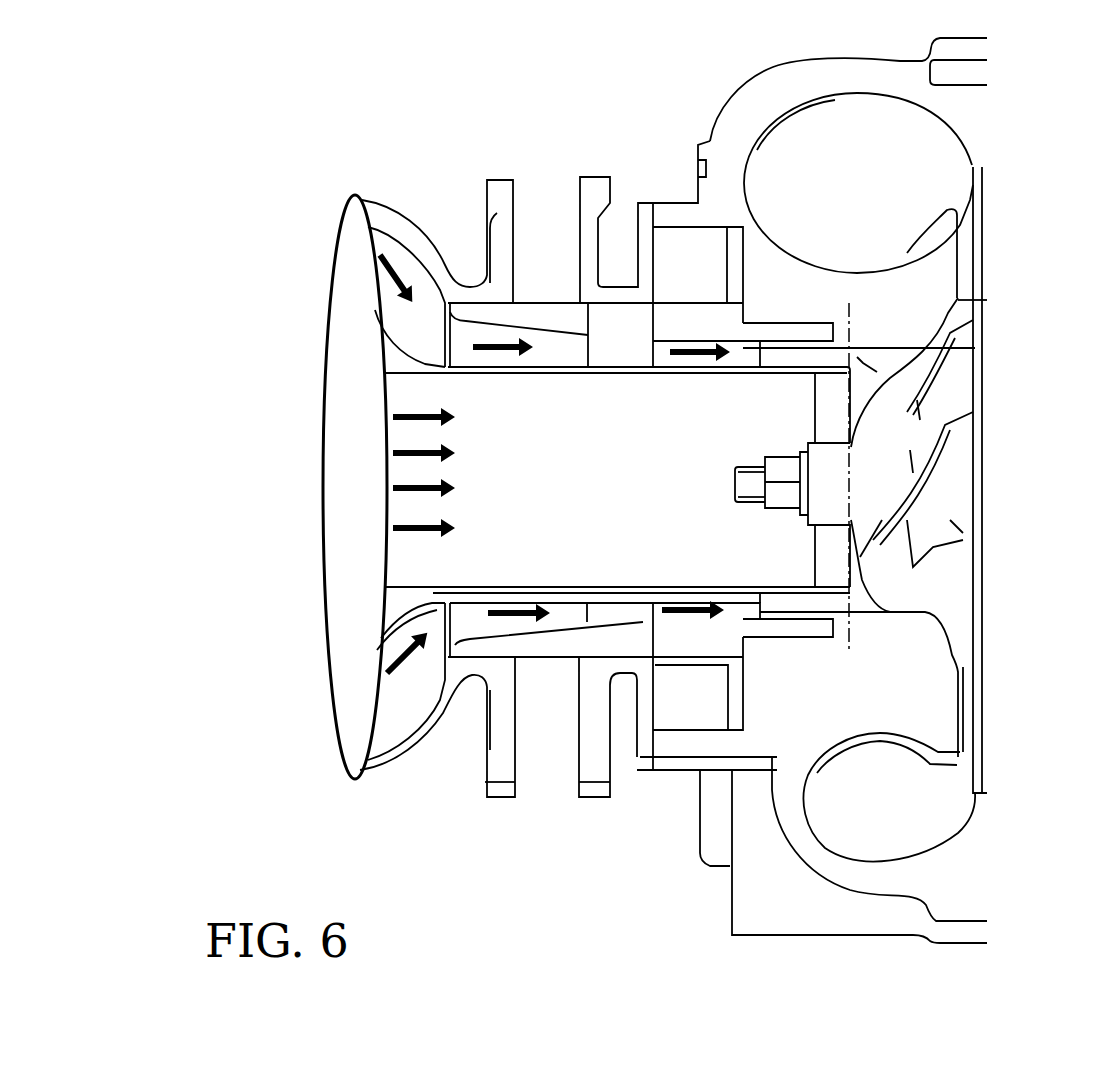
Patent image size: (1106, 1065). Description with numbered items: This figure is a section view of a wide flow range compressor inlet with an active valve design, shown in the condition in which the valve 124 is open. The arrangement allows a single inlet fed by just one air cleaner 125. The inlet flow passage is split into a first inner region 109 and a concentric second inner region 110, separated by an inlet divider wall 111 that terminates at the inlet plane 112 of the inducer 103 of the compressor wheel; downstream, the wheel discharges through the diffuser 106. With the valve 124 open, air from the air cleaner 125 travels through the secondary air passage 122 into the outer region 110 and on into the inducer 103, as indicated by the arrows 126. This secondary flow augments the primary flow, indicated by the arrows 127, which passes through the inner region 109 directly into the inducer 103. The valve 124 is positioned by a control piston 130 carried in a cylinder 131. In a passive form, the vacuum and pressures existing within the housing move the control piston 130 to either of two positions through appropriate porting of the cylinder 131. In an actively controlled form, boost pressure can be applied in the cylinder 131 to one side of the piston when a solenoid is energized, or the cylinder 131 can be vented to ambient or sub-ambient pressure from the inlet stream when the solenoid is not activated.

The inducer 103 is at (856, 597).
The diffuser 106 is at (960, 665).
The first inner region 109 is at (628, 484).
The second inner region 110 is at (788, 360).
The inlet divider wall 111 is at (633, 588).
The inlet plane 112 is at (848, 315).
The secondary air passage 122 is at (580, 357).
The valve 124 is at (537, 312).
The air cleaner 125 is at (340, 517).
The arrows 126 is at (508, 354).
The arrows 127 is at (418, 535).
The control piston 130 is at (734, 260).
The cylinder 131 is at (682, 248).